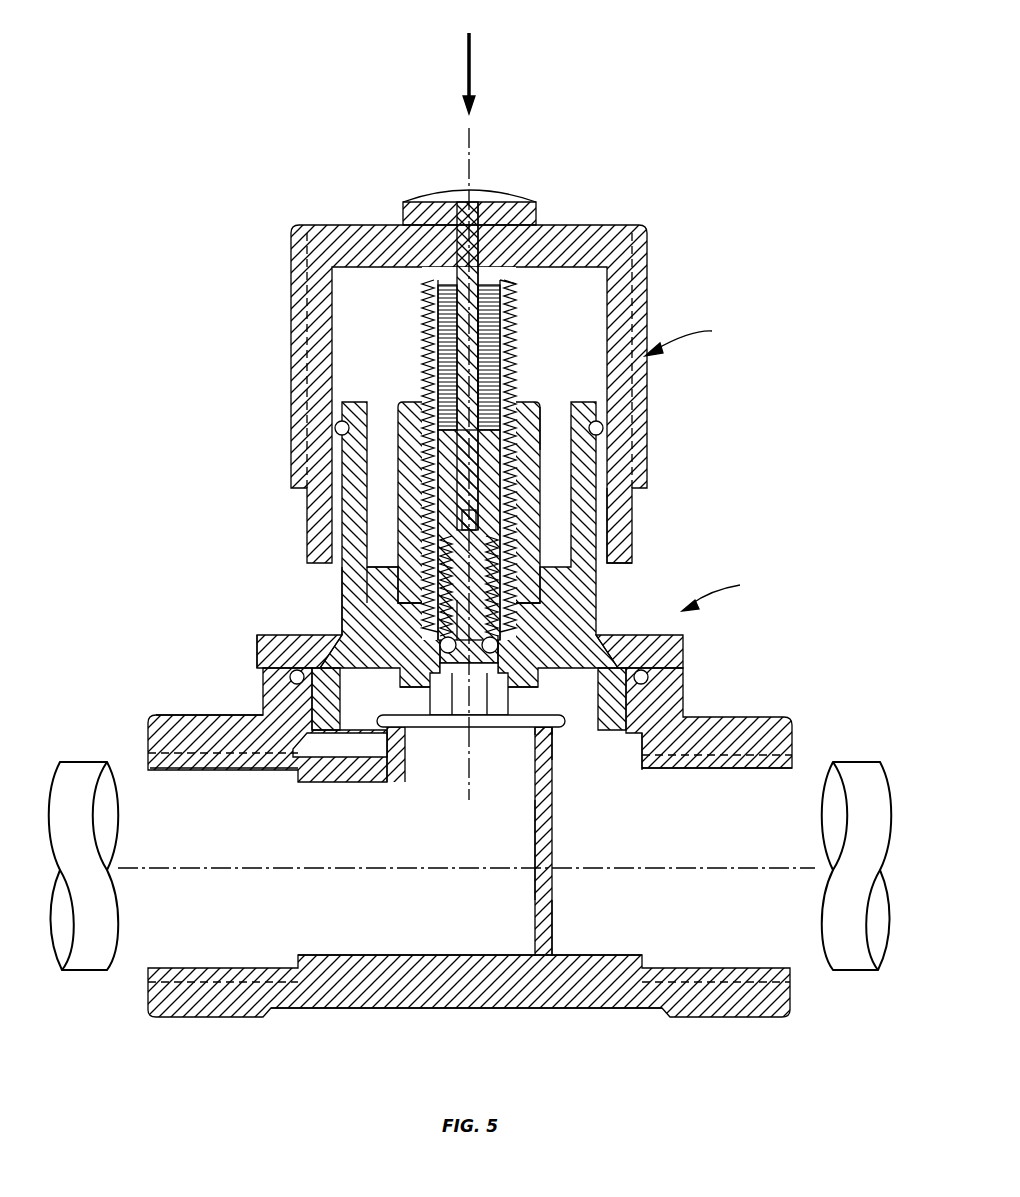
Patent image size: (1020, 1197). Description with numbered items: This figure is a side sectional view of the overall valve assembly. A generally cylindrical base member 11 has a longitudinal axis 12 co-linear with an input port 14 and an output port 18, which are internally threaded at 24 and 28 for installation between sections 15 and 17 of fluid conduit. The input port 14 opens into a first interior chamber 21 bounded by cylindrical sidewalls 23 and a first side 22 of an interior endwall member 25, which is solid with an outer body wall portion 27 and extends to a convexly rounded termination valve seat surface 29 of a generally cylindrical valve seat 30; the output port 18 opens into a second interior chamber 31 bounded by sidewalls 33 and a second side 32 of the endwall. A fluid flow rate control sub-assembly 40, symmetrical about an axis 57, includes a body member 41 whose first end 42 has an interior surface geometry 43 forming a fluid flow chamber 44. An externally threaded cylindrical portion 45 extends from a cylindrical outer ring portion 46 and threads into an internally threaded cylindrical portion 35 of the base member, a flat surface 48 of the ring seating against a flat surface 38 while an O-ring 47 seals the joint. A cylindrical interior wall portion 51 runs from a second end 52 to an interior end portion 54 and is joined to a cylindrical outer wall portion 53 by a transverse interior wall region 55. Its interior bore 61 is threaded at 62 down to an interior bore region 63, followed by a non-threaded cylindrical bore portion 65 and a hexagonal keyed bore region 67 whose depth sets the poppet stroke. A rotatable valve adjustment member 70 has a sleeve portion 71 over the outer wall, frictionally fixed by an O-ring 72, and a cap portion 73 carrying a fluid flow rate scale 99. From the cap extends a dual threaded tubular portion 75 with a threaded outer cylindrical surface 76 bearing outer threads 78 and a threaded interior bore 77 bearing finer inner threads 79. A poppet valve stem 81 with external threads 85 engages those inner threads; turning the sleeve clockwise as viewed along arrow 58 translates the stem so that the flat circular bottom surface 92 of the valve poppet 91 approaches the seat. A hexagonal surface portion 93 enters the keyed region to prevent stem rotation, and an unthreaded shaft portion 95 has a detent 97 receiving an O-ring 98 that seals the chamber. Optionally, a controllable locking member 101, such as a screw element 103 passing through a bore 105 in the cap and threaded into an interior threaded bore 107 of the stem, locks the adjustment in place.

The base member 11 is at (735, 1020).
The longitudinal axis 12 is at (730, 870).
The input port 14 is at (180, 844).
The section of fluid transporting conduit 15 is at (70, 762).
The section of fluid transporting conduit 17 is at (863, 762).
The output port 18 is at (760, 844).
The first interior chamber 21 is at (395, 835).
The first side of interior endwall 22 is at (535, 823).
The cylindrical sidewalls 23 is at (360, 782).
The internal threads of input port 24 is at (150, 755).
The interior endwall member 25 is at (545, 960).
The outer body wall portion 27 is at (185, 716).
The internal threads of output port 28 is at (792, 755).
The termination valve seat surface 29 is at (545, 765).
The valve seat 30 is at (403, 733).
The second interior chamber 31 is at (604, 843).
The second side of interior endwall 32 is at (553, 823).
The cylindrical sidewalls 33 is at (640, 790).
The internally threaded cylindrical portion 35 is at (668, 700).
The flat surface 38 is at (268, 635).
The fluid flow rate control sub-assembly 40 is at (725, 592).
The body member 41 is at (590, 585).
The first end of body member 42 is at (345, 640).
The interior surface geometry 43 is at (338, 668).
The fluid flow chamber 44 is at (360, 698).
The externally threaded cylindrical portion 45 is at (615, 733).
The cylindrical outer ring portion 46 is at (683, 652).
The O-ring 47 is at (650, 677).
The first flat surface of outer ring portion 48 is at (290, 677).
The cylindrical interior wall portion 51 is at (420, 522).
The second end of body member 52 is at (530, 402).
The cylindrical outer wall portion 53 is at (355, 578).
The interior end portion 54 is at (510, 690).
The interior wall region 55 is at (383, 572).
The longitudinal axis 57 is at (469, 157).
The arrow 58 is at (469, 65).
The interior bore 61 is at (500, 560).
The internally threaded cylindrical portion 62 is at (536, 609).
The interior bore region 63 is at (505, 605).
The non-threaded cylindrical bore portion 65 is at (412, 609).
The keyed bore region 67 is at (402, 655).
The rotatable valve adjustment member 70 is at (693, 336).
The sleeve portion 71 is at (625, 522).
The O-ring 72 is at (603, 432).
The cap portion 73 is at (572, 225).
The dual threaded tubular portion 75 is at (422, 300).
The threaded outer cylindrical surface 76 is at (422, 345).
The threaded interior bore 77 is at (512, 290).
The outer threads 78 is at (518, 338).
The inner threads 79 is at (518, 311).
The poppet valve stem 81 is at (461, 545).
The external threads 85 is at (455, 620).
The valve poppet 91 is at (565, 718).
The flat circular bottom surface 92 is at (476, 745).
The hexagonal surface portion 93 is at (440, 702).
The unthreaded shaft portion 95 is at (498, 645).
The detent 97 is at (440, 641).
The O-ring 98 is at (522, 640).
The fluid flow rate scale 99 is at (330, 225).
The controllable locking member 101 is at (505, 200).
The screw element 103 is at (457, 246).
The bore 105 is at (480, 243).
The interior threaded bore 107 is at (423, 472).